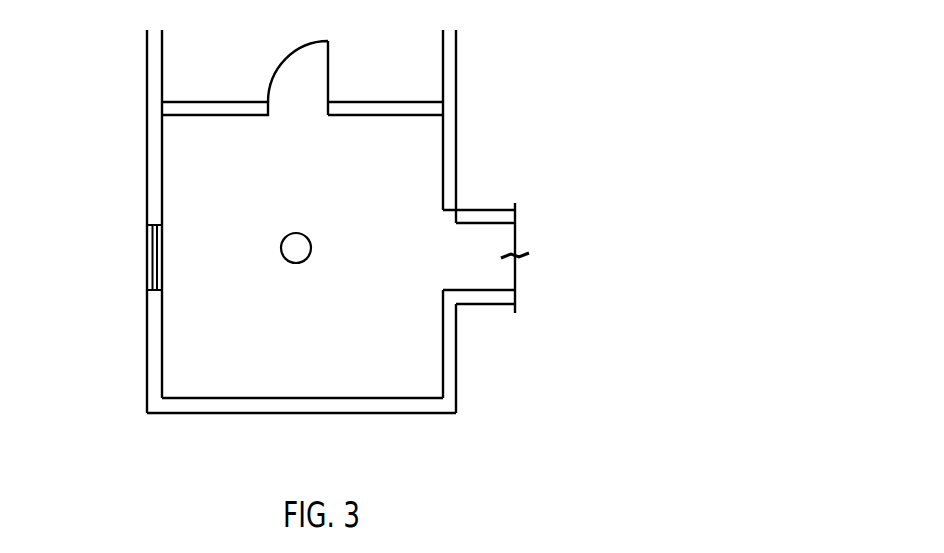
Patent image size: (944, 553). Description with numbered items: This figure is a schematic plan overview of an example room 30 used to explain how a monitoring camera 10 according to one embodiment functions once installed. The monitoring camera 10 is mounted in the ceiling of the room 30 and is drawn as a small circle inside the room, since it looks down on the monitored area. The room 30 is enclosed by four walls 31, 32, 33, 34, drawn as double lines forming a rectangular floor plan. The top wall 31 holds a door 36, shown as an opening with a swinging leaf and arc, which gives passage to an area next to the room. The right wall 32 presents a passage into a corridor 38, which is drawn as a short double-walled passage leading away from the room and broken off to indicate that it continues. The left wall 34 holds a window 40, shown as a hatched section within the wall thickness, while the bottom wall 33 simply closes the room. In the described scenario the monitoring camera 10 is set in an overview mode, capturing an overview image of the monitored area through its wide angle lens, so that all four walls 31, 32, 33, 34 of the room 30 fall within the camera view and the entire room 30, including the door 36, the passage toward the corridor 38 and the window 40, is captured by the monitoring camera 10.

The monitoring camera 10 is at (285, 237).
The room 30 is at (356, 337).
The wall 31 is at (238, 101).
The wall 32 is at (457, 140).
The wall 33 is at (285, 413).
The wall 34 is at (148, 350).
The door 36 is at (328, 55).
The corridor 38 is at (469, 236).
The window 40 is at (148, 258).